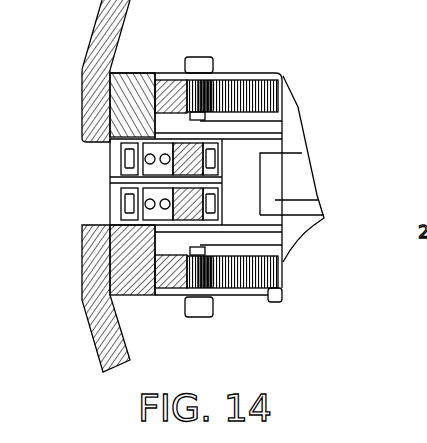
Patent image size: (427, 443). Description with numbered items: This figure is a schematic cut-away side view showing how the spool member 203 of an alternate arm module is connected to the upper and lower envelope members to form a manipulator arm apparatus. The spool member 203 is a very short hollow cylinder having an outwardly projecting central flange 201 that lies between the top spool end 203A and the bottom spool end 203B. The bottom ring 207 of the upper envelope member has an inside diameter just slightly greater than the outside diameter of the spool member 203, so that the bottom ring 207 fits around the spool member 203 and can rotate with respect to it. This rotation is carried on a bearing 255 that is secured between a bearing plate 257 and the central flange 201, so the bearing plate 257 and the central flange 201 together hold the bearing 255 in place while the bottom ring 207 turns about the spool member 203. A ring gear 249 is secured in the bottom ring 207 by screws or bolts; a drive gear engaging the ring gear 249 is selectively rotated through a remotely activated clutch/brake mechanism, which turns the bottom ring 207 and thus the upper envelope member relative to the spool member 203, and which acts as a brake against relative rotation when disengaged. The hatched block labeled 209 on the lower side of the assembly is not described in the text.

The central flange 201 is at (222, 177).
The spool member 203 is at (222, 156).
The top spool end 203A is at (284, 121).
The bottom spool end 203B is at (140, 246).
The bottom ring 207 is at (129, 72).
The lower block 209 is at (131, 296).
The ring gear 249 is at (285, 74).
The bearing 255 is at (106, 132).
The bearing plate 257 is at (147, 108).